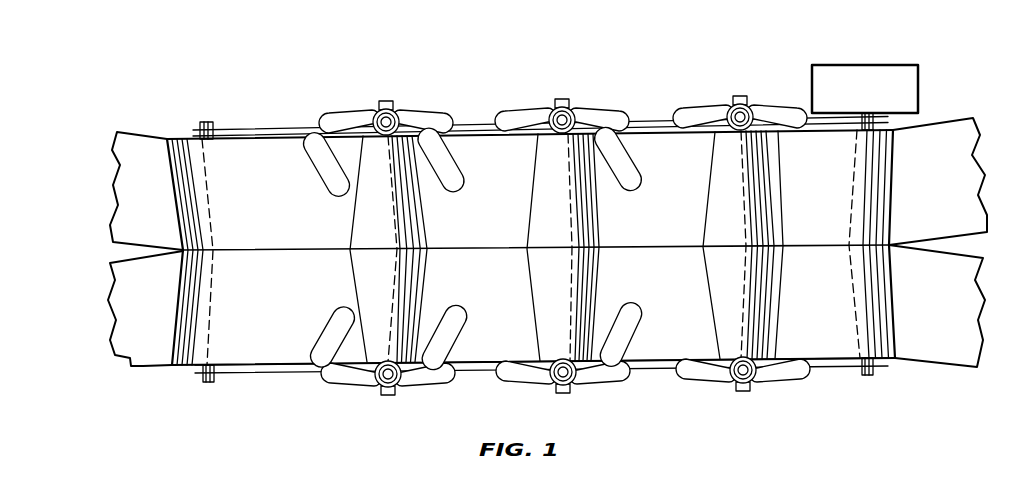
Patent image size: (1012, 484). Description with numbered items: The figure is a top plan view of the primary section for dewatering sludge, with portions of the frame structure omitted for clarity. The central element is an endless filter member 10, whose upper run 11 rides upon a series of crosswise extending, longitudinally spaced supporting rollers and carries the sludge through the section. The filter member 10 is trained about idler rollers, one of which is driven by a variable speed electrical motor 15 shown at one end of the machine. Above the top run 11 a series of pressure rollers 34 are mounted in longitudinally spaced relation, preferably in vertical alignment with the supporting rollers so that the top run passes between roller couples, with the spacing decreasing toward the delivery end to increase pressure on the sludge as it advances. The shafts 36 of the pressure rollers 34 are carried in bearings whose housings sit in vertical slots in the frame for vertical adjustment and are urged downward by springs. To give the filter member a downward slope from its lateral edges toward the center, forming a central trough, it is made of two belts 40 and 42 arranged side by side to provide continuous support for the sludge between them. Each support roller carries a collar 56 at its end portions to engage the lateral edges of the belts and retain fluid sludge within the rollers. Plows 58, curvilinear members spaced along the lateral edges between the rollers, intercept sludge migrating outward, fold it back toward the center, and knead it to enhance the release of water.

The endless filter member 10 is at (282, 369).
The upper run 11 is at (249, 168).
The variable speed electrical motor 15 is at (895, 87).
The pressure rollers 34 is at (406, 297).
The shafts 36 is at (393, 103).
The belt 40 is at (134, 148).
The belt 42 is at (148, 356).
The collar 56 is at (333, 112).
The plows 58 is at (340, 197).